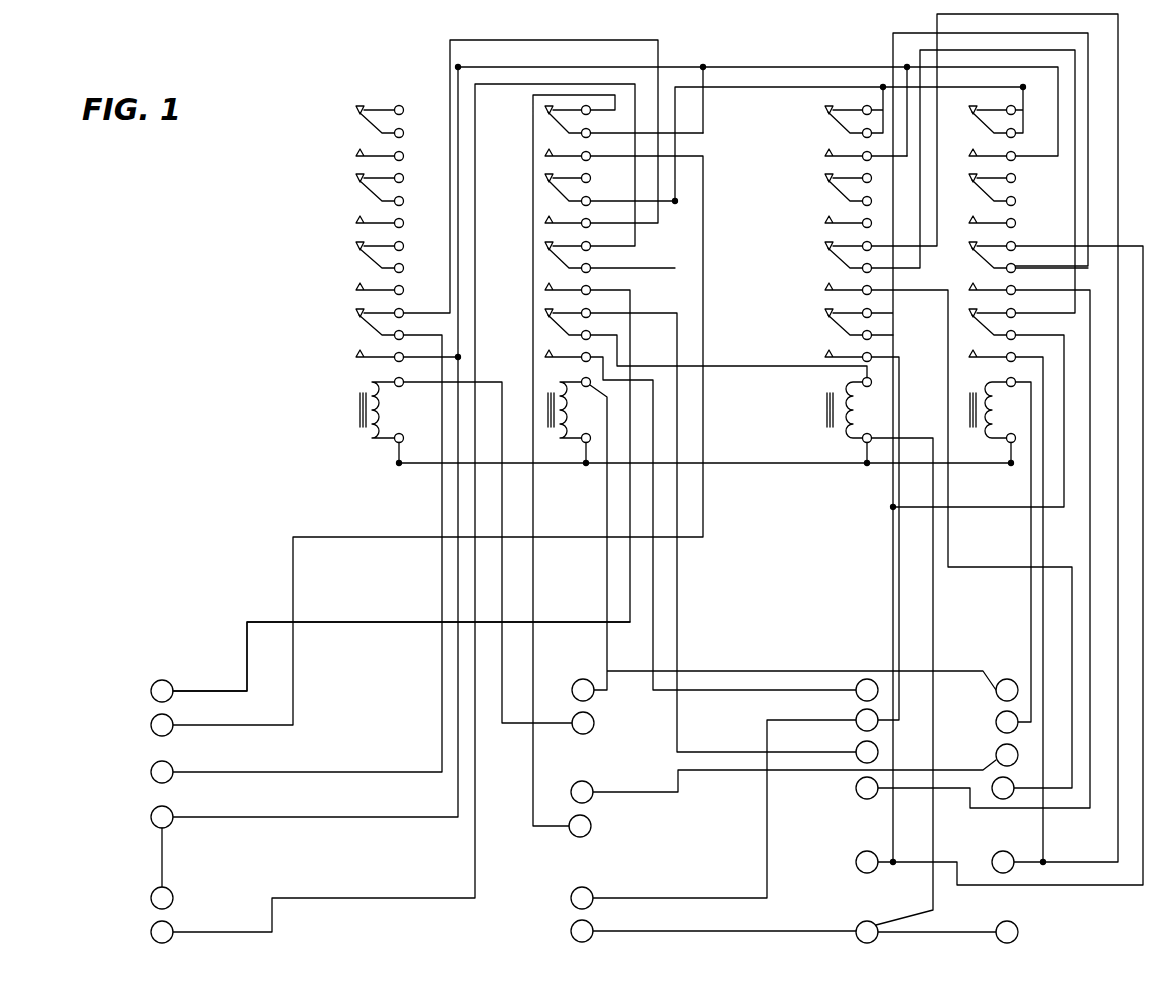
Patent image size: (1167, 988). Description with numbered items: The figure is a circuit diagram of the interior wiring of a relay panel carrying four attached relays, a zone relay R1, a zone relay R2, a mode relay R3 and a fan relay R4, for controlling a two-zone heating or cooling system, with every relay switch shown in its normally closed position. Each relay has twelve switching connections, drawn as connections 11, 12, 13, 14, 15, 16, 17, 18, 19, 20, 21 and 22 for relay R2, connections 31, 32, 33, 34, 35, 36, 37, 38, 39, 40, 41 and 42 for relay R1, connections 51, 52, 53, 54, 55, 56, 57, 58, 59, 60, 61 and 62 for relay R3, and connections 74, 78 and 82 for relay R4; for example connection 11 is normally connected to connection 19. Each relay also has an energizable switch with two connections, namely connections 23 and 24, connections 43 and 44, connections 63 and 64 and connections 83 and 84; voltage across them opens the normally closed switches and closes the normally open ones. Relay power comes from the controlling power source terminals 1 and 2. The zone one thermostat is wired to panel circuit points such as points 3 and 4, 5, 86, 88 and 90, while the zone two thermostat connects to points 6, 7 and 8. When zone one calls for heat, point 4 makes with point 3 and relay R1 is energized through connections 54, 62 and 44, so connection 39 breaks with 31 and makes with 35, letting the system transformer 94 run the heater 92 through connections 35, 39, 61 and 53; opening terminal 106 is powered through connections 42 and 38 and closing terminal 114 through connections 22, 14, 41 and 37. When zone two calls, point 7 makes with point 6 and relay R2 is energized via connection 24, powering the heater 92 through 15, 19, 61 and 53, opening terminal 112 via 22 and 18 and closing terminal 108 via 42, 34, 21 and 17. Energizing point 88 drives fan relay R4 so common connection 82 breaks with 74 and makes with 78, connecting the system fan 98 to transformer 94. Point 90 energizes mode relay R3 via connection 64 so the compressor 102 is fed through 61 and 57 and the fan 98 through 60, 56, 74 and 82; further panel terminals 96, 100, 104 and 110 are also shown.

The controlling power source terminal 1 is at (570, 933).
The controlling power source terminal 2 is at (570, 898).
The circuit point 3 is at (875, 759).
The circuit point 4 is at (855, 734).
The terminal 5 is at (855, 701).
The heating calling and cooling non-calling connection point 6 is at (988, 755).
The common connection point 7 is at (988, 722).
The cooling calling and heating non-calling connection point 8 is at (988, 690).
The switching connection 11 is at (996, 110).
The switching connection 12 is at (992, 170).
The switching connection 13 is at (1010, 555).
The switching connection 14 is at (992, 305).
The switching connection 15 is at (992, 148).
The switching connection 16 is at (992, 215).
The switching connection 17 is at (984, 538).
The switching connection 18 is at (1006, 599).
The switching connection 19 is at (994, 125).
The switching connection 20 is at (994, 193).
The switching connection 21 is at (1030, 260).
The switching connection 22 is at (978, 410).
The energizable switch connection 23 is at (996, 450).
The energizable switch connection 24 is at (1006, 541).
The switching connection 31 is at (854, 110).
The switching connection 32 is at (848, 170).
The switching connection 33 is at (971, 439).
The switching connection 34 is at (956, 449).
The switching connection 35 is at (866, 148).
The switching connection 36 is at (848, 215).
The switching connection 37 is at (948, 528).
The switching connection 38 is at (862, 528).
The switching connection 39 is at (850, 125).
The switching connection 40 is at (850, 193).
The switching connection 41 is at (951, 181).
The switching connection 42 is at (860, 327).
The energizable switch connection 43 is at (885, 680).
The energizable switch connection 44 is at (879, 374).
The switching connection 51 is at (574, 457).
The switching connection 52 is at (568, 170).
The switching connection 53 is at (404, 508).
The switching connection 54 is at (700, 522).
The switching connection 55 is at (438, 430).
The switching connection 56 is at (568, 215).
The switching connection 57 is at (401, 480).
The switching connection 58 is at (700, 513).
The switching connection 59 is at (625, 125).
The switching connection 60 is at (787, 145).
The switching connection 61 is at (611, 260).
The switching connection 62 is at (707, 346).
The energizable switch connection 63 is at (570, 450).
The energizable switch connection 64 is at (776, 525).
The switching connection 74 is at (507, 179).
The switching connection 78 is at (615, 441).
The common connection 82 is at (307, 543).
The energizable switch connection 83 is at (688, 450).
The energizable switch connection 84 is at (602, 826).
The circuit point 86 is at (590, 785).
The circuit point 88 is at (606, 716).
The circuit point 90 is at (572, 690).
The heater 92 is at (151, 937).
The system transformer 94 is at (151, 904).
The terminal 96 is at (151, 824).
The system fan 98 is at (148, 771).
The terminal 100 is at (148, 724).
The compressor 102 is at (148, 690).
The terminal 104 is at (859, 924).
The opening terminal 106 is at (856, 866).
The closing terminal 108 is at (856, 794).
The terminal 110 is at (1012, 923).
The opening terminal 112 is at (992, 859).
The closing terminal 114 is at (1010, 797).
The zone relay R1 is at (859, 410).
The zone relay R2 is at (1000, 410).
The mode relay R3 is at (577, 410).
The fan relay R4 is at (392, 410).